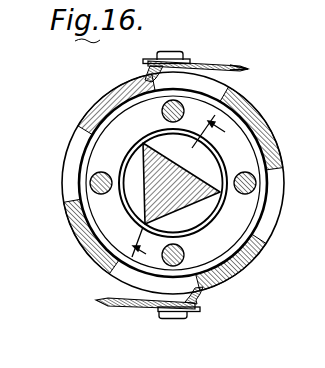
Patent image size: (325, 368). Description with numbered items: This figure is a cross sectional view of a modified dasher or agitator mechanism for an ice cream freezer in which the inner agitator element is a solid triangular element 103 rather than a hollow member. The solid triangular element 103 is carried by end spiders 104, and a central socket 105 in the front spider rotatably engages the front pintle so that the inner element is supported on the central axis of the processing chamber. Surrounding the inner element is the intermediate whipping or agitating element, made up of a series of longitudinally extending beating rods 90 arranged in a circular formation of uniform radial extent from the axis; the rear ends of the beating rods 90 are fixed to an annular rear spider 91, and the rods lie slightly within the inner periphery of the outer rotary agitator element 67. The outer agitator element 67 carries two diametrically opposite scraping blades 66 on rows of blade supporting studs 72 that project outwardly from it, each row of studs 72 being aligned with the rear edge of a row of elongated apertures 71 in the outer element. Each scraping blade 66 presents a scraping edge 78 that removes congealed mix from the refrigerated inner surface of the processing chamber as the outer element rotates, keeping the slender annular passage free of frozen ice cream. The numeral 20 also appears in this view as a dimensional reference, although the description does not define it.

The dimension / radial width 20 is at (188, 188).
The scraping blades 66 is at (213, 63).
The outer rotary agitator element 67 is at (272, 129).
The elongated apertures 71 is at (285, 187).
The blade supporting studs 72 is at (185, 54).
The scraping edge 78 is at (241, 66).
The beating rods 90 is at (90, 183).
The annular rear spider 91 is at (103, 148).
The solid triangular element 103 is at (185, 205).
The end spiders 104 is at (128, 200).
The central socket 105 is at (310, 280).